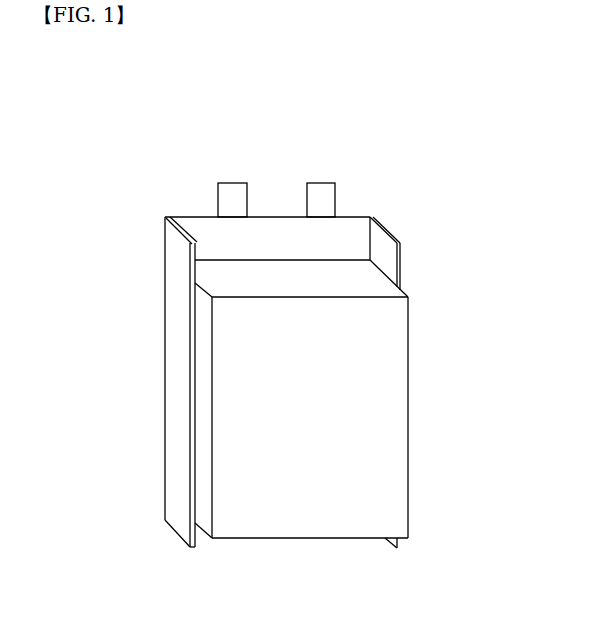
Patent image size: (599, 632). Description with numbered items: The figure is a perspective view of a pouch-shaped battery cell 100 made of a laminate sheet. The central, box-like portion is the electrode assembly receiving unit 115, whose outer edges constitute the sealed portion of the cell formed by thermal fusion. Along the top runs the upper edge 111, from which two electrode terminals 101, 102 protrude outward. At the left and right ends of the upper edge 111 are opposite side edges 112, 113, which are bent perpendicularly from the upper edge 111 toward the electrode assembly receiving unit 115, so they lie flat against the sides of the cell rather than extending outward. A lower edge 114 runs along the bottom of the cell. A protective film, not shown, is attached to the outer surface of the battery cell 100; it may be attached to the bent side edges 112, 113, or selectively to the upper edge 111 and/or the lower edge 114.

The battery cell 100 is at (107, 109).
The electrode terminal 101 is at (242, 180).
The electrode terminal 102 is at (322, 180).
The upper edge 111 is at (213, 240).
The side edge 112 is at (173, 355).
The side edge 113 is at (391, 258).
The lower edge 114 is at (309, 550).
The electrode assembly receiving unit 115 is at (397, 395).